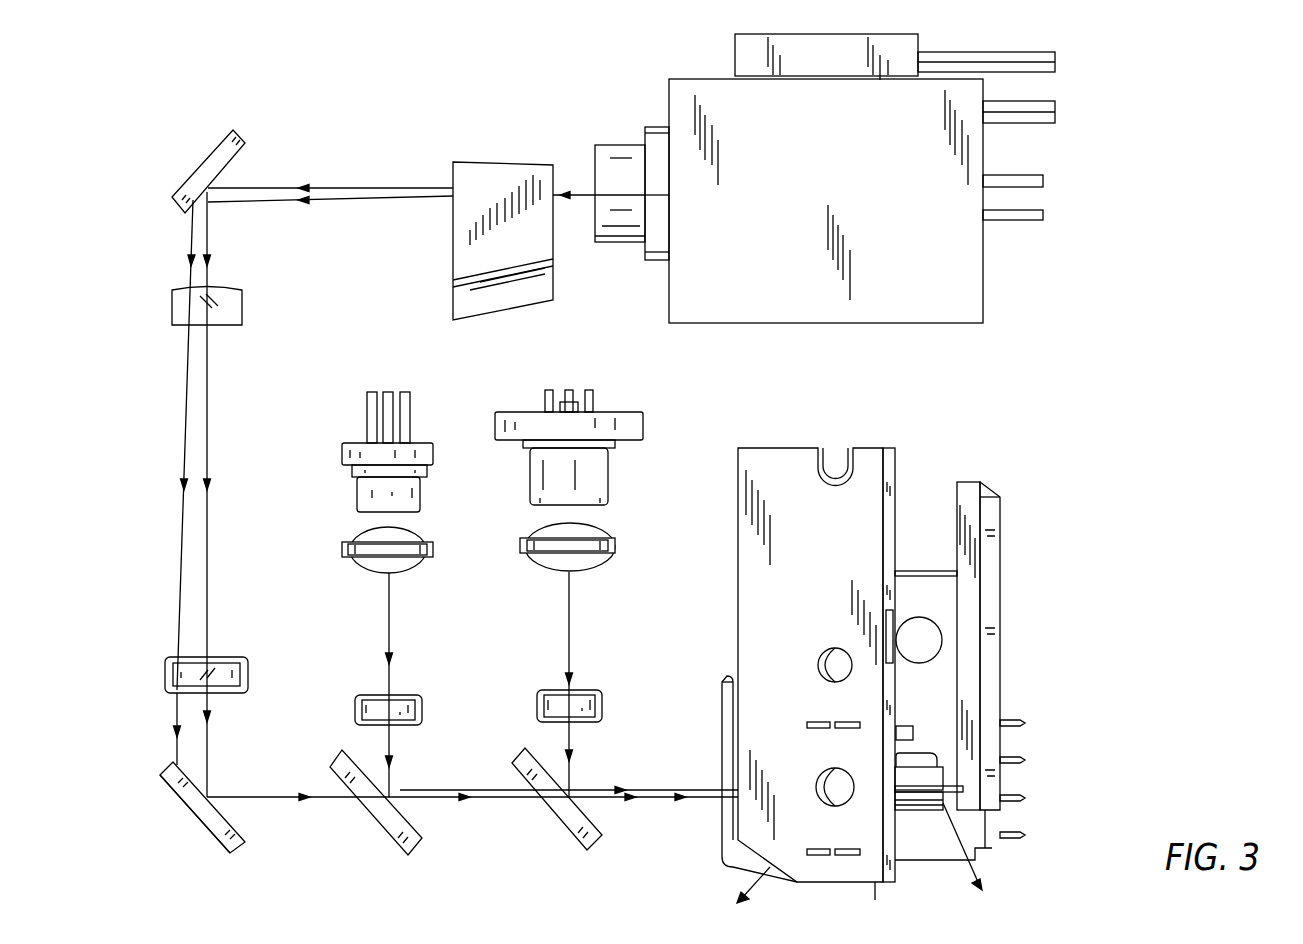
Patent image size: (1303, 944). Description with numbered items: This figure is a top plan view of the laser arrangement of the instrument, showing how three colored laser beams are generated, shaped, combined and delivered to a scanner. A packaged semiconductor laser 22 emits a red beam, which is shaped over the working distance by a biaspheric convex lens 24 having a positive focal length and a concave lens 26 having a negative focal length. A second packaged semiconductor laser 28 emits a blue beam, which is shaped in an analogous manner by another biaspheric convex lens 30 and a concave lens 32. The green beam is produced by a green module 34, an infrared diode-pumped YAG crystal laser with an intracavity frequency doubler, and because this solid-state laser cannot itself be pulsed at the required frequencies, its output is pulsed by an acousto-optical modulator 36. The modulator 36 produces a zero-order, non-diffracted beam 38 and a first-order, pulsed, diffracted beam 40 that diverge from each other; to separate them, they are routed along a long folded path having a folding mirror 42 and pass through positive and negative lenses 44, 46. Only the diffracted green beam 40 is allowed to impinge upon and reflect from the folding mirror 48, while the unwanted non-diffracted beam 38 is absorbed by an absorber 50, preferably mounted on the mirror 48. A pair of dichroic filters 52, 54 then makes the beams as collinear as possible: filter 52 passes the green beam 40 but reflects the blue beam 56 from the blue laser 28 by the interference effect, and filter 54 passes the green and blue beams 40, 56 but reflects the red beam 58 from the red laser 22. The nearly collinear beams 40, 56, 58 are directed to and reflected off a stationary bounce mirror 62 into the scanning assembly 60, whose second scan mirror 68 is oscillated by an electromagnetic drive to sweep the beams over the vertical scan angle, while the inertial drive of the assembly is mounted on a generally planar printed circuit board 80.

The semiconductor laser 22 is at (608, 478).
The biaspheric convex lens 24 is at (615, 545).
The concave lens 26 is at (602, 705).
The semiconductor laser 28 is at (420, 490).
The biaspheric convex lens 30 is at (433, 550).
The concave lens 32 is at (422, 710).
The green module 34 is at (722, 323).
The acousto-optical modulator 36 is at (490, 315).
The zero-order, non-diffracted beam 38 is at (252, 203).
The first-order, pulsed, diffracted beam 40 is at (267, 187).
The folding mirror 42 is at (218, 142).
The positive lens 44 is at (242, 308).
The negative lens 46 is at (248, 670).
The folding mirror 48 is at (237, 833).
The absorber 50 is at (168, 787).
The dichroic filter 52 is at (417, 828).
The dichroic filter 54 is at (597, 827).
The blue beam 56 is at (389, 750).
The red beam 58 is at (570, 740).
The scanning assembly 60 is at (936, 468).
The stationary bounce mirror 62 is at (995, 548).
The second scan mirror 68 is at (930, 800).
The printed circuit board 80 is at (770, 465).